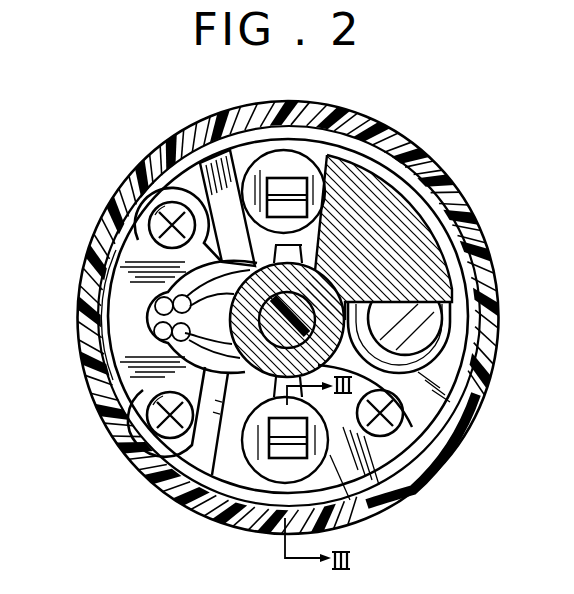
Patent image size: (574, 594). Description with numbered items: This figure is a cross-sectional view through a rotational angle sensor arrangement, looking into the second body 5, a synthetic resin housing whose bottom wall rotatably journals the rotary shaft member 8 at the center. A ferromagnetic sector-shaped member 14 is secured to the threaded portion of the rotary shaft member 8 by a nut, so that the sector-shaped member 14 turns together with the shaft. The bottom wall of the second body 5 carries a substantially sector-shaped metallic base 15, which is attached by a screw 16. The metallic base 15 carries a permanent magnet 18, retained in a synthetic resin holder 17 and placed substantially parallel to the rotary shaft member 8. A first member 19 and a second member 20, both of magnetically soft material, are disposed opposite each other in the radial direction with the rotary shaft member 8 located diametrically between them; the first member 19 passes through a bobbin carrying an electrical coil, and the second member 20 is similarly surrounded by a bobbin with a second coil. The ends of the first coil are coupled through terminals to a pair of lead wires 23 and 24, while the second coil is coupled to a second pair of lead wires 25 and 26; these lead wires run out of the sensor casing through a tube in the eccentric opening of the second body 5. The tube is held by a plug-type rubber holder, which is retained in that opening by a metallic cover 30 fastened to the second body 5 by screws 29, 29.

The second body 5 is at (412, 478).
The rotary shaft member 8 is at (402, 416).
The sector-shaped member 14 is at (388, 207).
The metallic base 15 is at (348, 482).
The screw 16 is at (402, 425).
The holder 17 is at (447, 303).
The permanent magnet 18 is at (410, 335).
The first member 19 is at (272, 442).
The second member 20 is at (268, 180).
The lead wire 23 is at (185, 352).
The lead wire 24 is at (165, 343).
The lead wire 25 is at (165, 306).
The lead wire 26 is at (180, 277).
The screws 29 is at (157, 215).
The metallic cover 30 is at (130, 326).